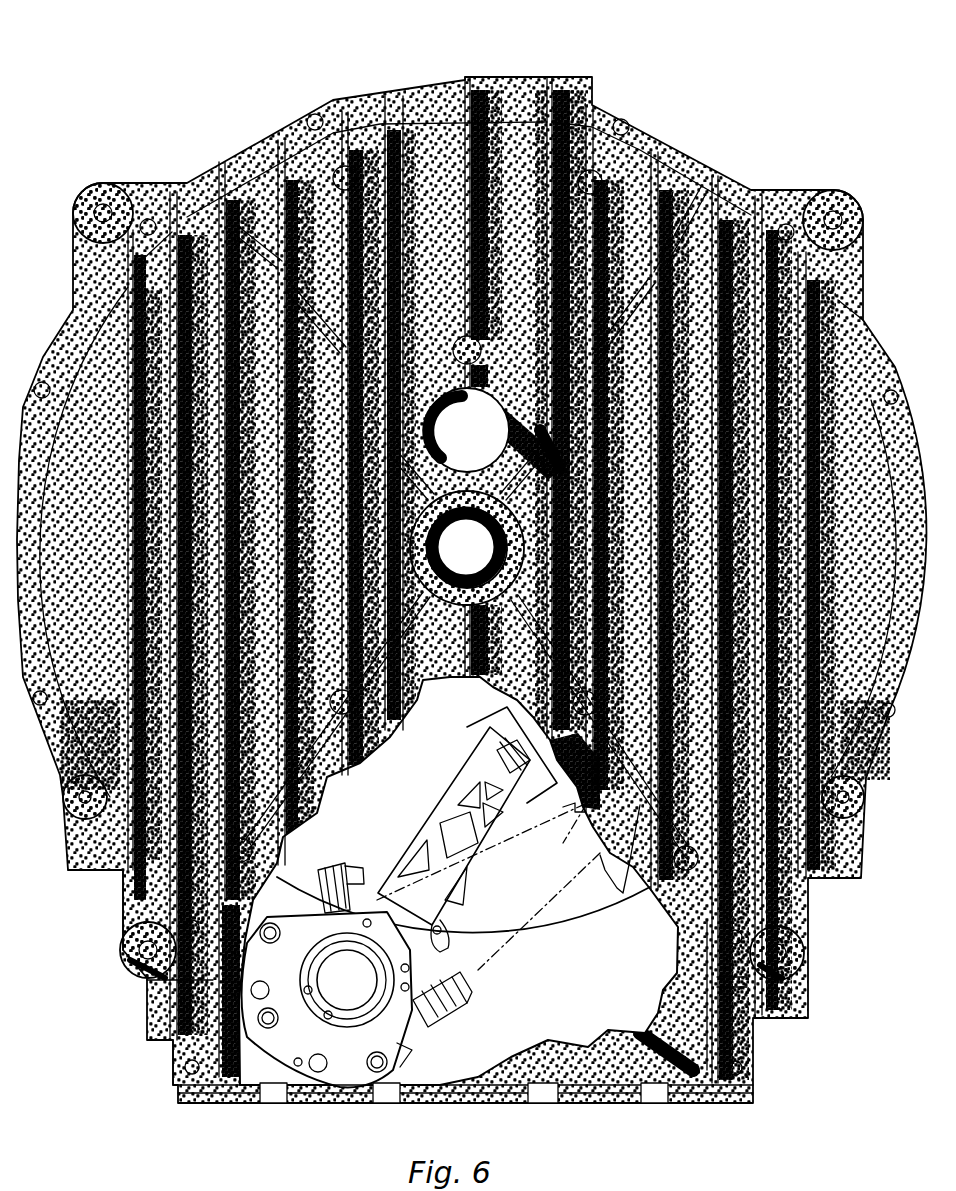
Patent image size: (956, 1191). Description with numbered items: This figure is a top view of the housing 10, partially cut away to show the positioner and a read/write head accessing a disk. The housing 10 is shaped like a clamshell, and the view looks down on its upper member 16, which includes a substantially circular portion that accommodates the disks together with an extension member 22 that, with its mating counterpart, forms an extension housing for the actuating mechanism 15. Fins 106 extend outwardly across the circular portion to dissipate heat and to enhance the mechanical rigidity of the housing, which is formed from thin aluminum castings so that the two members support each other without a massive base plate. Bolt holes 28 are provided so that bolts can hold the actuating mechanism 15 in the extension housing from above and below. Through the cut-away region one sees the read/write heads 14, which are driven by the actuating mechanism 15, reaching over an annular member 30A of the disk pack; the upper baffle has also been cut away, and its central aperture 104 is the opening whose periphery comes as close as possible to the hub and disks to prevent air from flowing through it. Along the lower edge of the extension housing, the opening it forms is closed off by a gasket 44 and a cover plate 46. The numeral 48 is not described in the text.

The housing 10 is at (471, 590).
The upper member 16 is at (752, 182).
The holes 28 is at (98, 190).
The central aperture 104 is at (460, 127).
The fins 106 is at (493, 393).
The bearing bore 48 is at (428, 518).
The read/write heads 14 is at (562, 820).
The annular member 30A is at (580, 915).
The actuating mechanism 15 is at (343, 1070).
The extension member 22 is at (105, 877).
The gasket 44 is at (178, 1090).
The cover plate 46 is at (193, 1100).